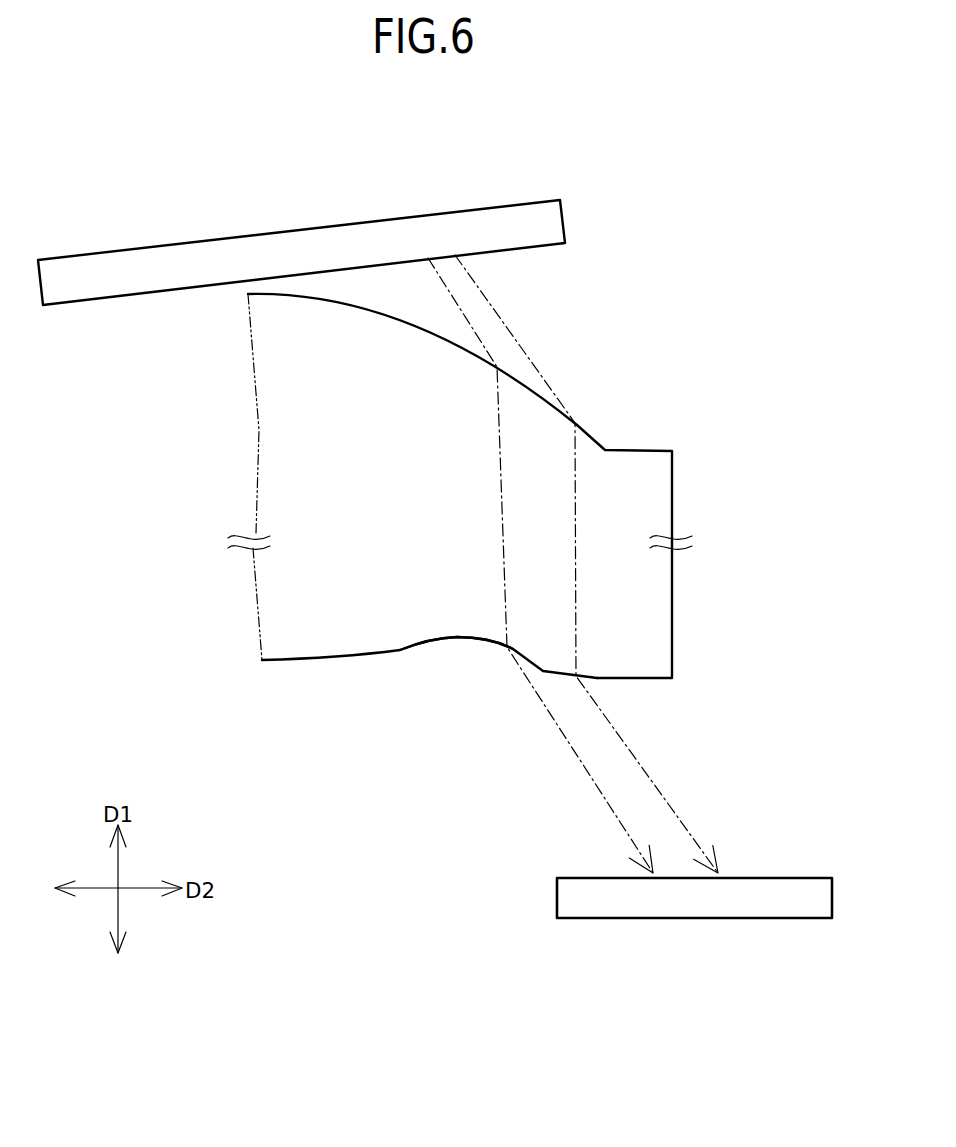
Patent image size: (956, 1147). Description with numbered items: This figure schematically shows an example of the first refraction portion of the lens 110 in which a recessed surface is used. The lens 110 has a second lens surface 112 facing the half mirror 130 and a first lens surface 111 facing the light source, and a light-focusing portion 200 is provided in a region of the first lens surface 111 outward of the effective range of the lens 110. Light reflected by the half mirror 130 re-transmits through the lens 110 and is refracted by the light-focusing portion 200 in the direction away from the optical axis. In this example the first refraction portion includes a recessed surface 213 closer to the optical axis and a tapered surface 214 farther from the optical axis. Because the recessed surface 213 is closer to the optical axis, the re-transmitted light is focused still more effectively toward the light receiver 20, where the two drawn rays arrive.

The light receiver 20 is at (677, 906).
The lens 110 is at (433, 437).
The first lens surface 111 is at (333, 659).
The second lens surface 112 is at (378, 313).
The half mirror 130 is at (185, 257).
The light-focusing portion 200 is at (464, 661).
The recessed surface 213 is at (497, 645).
The tapered surface 214 is at (565, 677).